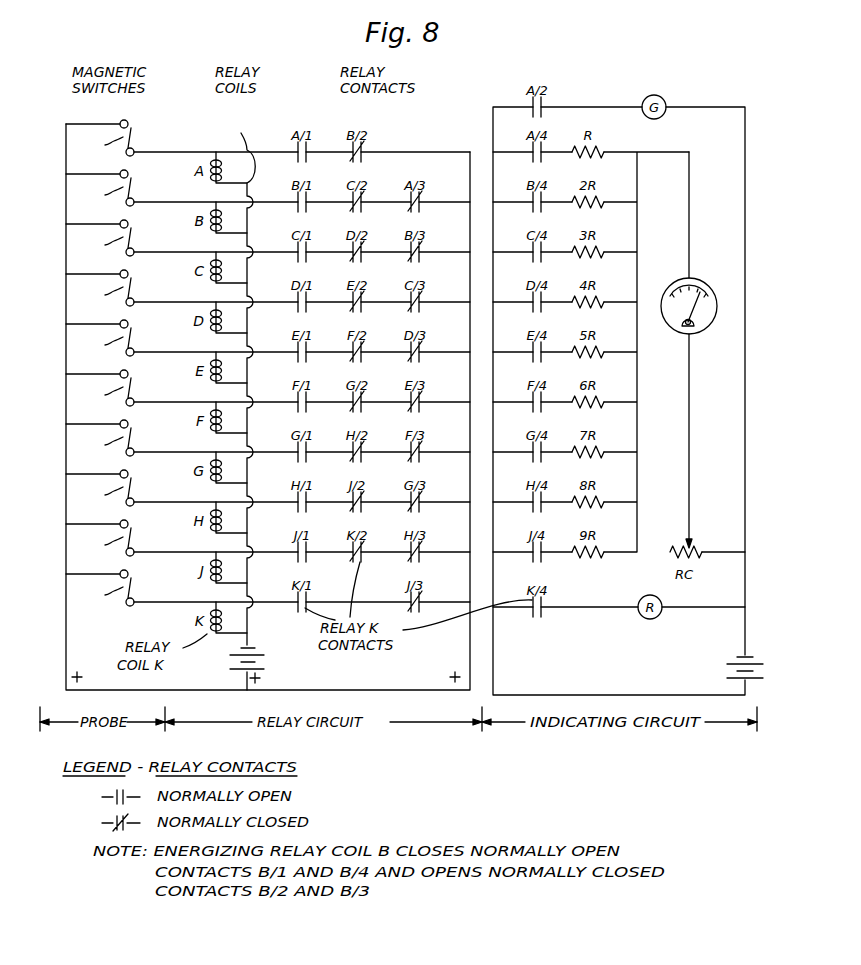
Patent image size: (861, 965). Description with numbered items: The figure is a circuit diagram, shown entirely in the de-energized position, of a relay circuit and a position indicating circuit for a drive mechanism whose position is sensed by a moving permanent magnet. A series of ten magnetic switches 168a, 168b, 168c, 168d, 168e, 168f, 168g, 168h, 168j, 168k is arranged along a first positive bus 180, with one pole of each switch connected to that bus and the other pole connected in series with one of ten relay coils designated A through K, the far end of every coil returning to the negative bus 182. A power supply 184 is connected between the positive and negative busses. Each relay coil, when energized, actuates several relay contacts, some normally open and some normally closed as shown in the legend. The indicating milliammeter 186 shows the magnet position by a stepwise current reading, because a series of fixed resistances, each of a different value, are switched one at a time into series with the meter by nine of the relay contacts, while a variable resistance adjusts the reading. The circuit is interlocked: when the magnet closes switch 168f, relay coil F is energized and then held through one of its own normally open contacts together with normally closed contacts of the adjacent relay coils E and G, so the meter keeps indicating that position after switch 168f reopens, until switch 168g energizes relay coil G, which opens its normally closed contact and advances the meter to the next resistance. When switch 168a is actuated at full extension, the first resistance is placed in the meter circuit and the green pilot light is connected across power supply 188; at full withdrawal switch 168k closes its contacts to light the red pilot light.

The magnetic switch 168a is at (100, 144).
The magnetic switch 168b is at (100, 194).
The magnetic switch 168c is at (100, 244).
The magnetic switch 168d is at (100, 294).
The magnetic switch 168e is at (100, 344).
The magnetic switch 168f is at (100, 394).
The magnetic switch 168g is at (100, 444).
The magnetic switch 168h is at (100, 494).
The magnetic switch 168j is at (100, 544).
The magnetic switch 168k is at (100, 594).
The first positive bus 180 is at (64, 388).
The negative bus 182 is at (235, 379).
The power supply 184 is at (262, 662).
The indicating milliammeter 186 is at (708, 313).
The power supply 188 is at (727, 669).